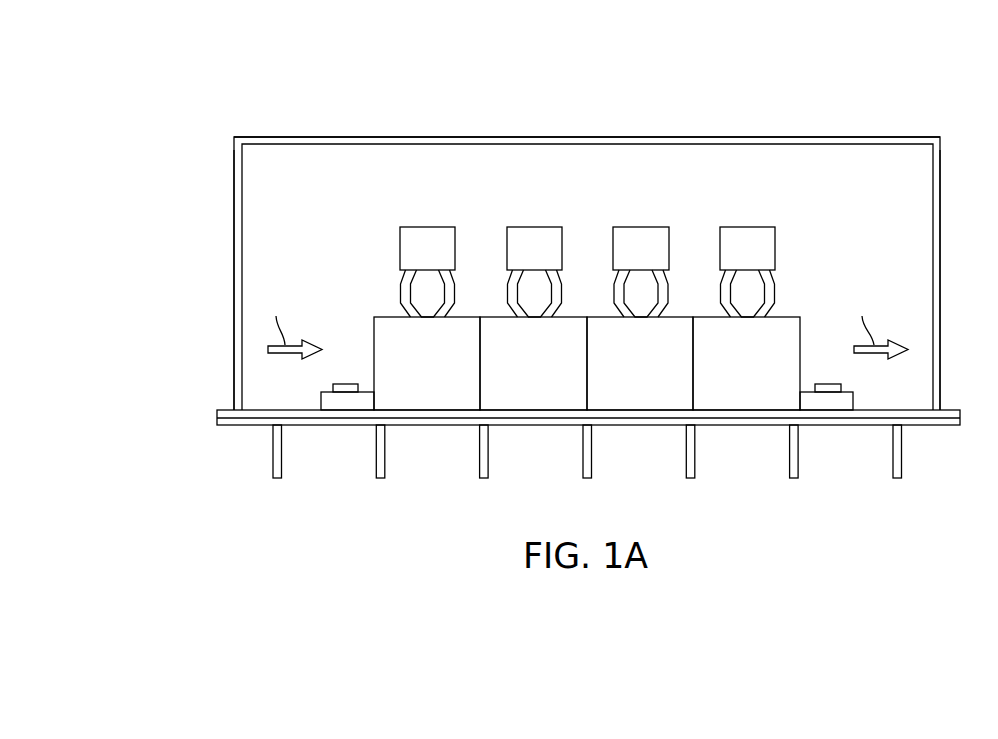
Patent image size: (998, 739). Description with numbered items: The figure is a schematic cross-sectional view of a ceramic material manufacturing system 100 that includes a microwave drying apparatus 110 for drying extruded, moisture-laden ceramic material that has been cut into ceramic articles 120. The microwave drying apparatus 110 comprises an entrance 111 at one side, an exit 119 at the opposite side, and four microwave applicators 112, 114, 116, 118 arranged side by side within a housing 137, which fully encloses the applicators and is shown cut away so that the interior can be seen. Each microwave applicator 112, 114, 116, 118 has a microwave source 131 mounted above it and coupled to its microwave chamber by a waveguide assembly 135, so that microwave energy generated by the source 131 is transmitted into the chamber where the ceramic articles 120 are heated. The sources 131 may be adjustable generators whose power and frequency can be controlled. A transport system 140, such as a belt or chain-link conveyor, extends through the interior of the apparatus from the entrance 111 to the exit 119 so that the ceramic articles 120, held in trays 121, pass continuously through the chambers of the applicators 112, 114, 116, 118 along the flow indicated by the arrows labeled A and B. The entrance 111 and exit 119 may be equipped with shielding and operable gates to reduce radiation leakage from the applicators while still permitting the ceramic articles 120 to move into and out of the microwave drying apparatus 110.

The ceramic material manufacturing system 100 is at (198, 173).
The microwave drying apparatus 110 is at (273, 138).
The entrance 111 is at (234, 333).
The microwave applicator 112 is at (375, 315).
The microwave applicator 114 is at (573, 314).
The microwave applicator 116 is at (680, 314).
The microwave applicator 118 is at (791, 314).
The exit 119 is at (940, 345).
The ceramic articles 120 is at (345, 384).
The trays 121 is at (321, 402).
The microwave source 131 is at (428, 227).
The waveguide assembly 135 is at (507, 276).
The housing 137 is at (874, 136).
The transport system 140 is at (259, 431).